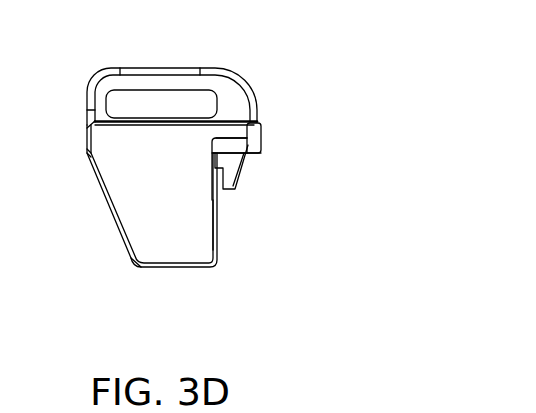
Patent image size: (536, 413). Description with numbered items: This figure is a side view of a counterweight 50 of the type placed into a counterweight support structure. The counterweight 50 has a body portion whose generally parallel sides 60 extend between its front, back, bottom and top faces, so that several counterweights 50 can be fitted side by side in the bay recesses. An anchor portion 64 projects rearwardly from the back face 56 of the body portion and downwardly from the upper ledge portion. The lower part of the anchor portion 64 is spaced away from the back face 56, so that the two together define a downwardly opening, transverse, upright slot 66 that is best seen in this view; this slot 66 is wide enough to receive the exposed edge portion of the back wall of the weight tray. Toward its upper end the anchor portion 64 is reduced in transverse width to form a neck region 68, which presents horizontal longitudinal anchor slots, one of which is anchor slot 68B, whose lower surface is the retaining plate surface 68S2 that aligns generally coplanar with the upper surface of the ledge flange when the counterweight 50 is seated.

The counterweight 50 is at (91, 243).
The back face 56 is at (219, 226).
The sides 60 is at (175, 184).
The anchor portion 64 is at (264, 168).
The upright slot 66 is at (223, 190).
The neck region 68 is at (262, 146).
The anchor slot 68B is at (230, 146).
The retaining plate surface 68S2 is at (219, 126).